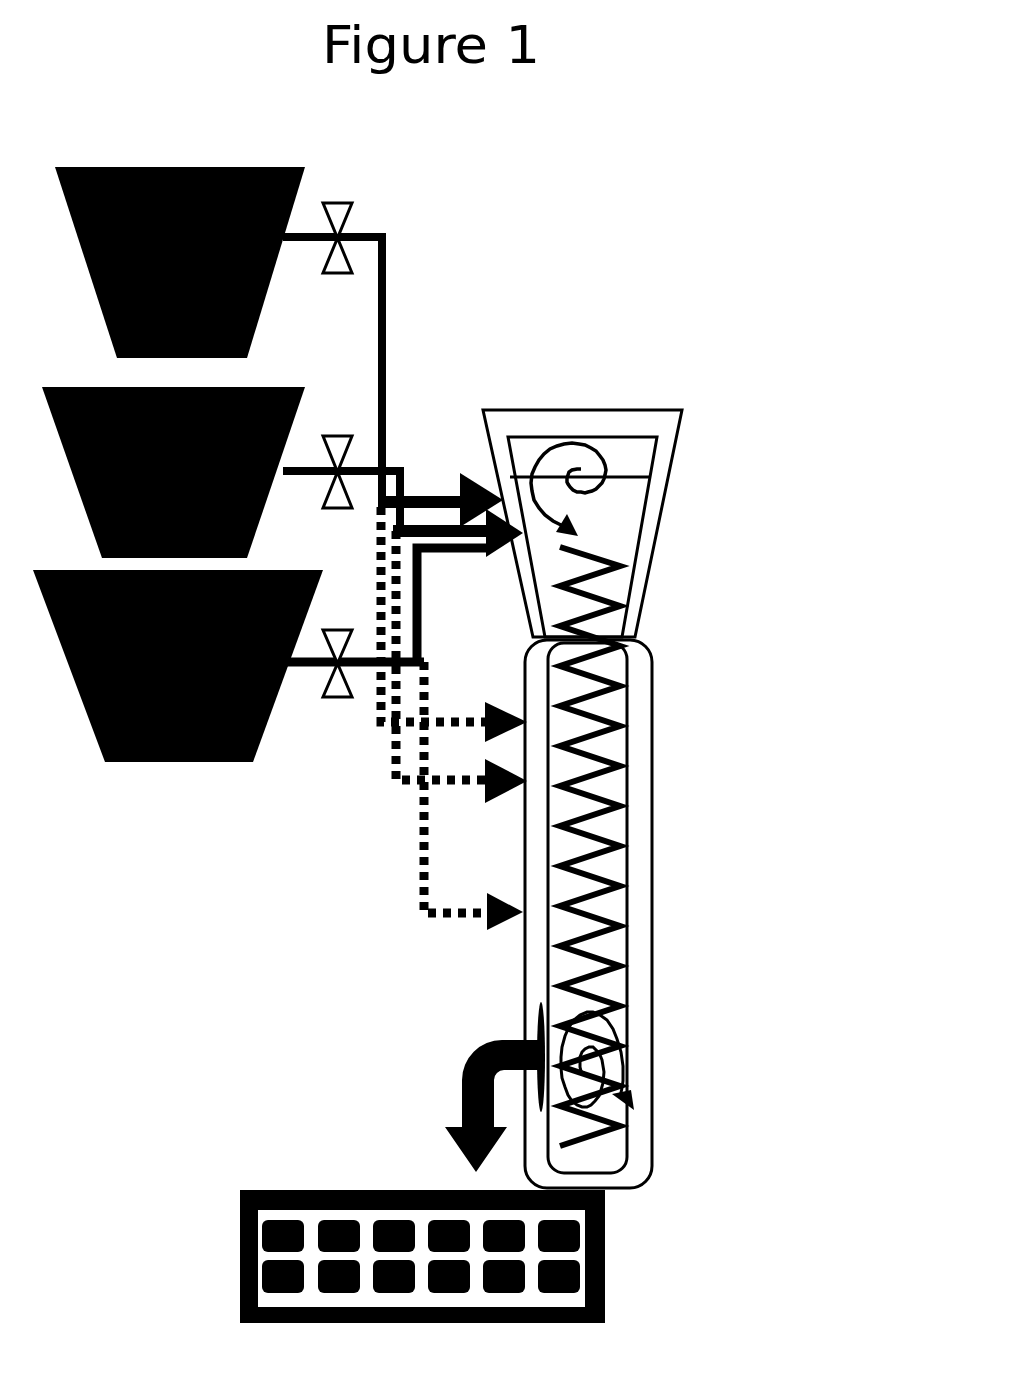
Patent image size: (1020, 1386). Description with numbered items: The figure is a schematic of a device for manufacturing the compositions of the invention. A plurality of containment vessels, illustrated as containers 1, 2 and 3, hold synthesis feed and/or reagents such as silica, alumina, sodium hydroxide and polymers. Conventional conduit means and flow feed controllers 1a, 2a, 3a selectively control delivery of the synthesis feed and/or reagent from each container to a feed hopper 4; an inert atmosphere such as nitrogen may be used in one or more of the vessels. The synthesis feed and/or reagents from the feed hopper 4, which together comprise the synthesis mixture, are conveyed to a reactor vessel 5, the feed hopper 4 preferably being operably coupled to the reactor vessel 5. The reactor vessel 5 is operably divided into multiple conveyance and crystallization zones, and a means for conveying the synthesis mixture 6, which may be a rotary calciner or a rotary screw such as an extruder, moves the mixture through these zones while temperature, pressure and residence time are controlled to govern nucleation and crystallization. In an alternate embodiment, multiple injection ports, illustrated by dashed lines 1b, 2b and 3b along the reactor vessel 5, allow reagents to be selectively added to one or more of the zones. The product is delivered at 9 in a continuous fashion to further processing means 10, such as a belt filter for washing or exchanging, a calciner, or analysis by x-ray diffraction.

The container 1 is at (180, 262).
The container 2 is at (173, 472).
The container 3 is at (178, 666).
The flow feed controller 1a is at (393, 344).
The flow feed controller 2a is at (403, 471).
The flow feed controller 3a is at (385, 622).
The injection port 1b is at (480, 745).
The injection port 2b is at (480, 790).
The injection port 3b is at (480, 913).
The feed hopper 4 is at (682, 505).
The reactor vessel 5 is at (658, 790).
The means for conveying the synthesis mixture 6 is at (602, 900).
The product delivery 9 is at (455, 1100).
The further processing means 10 is at (605, 1260).